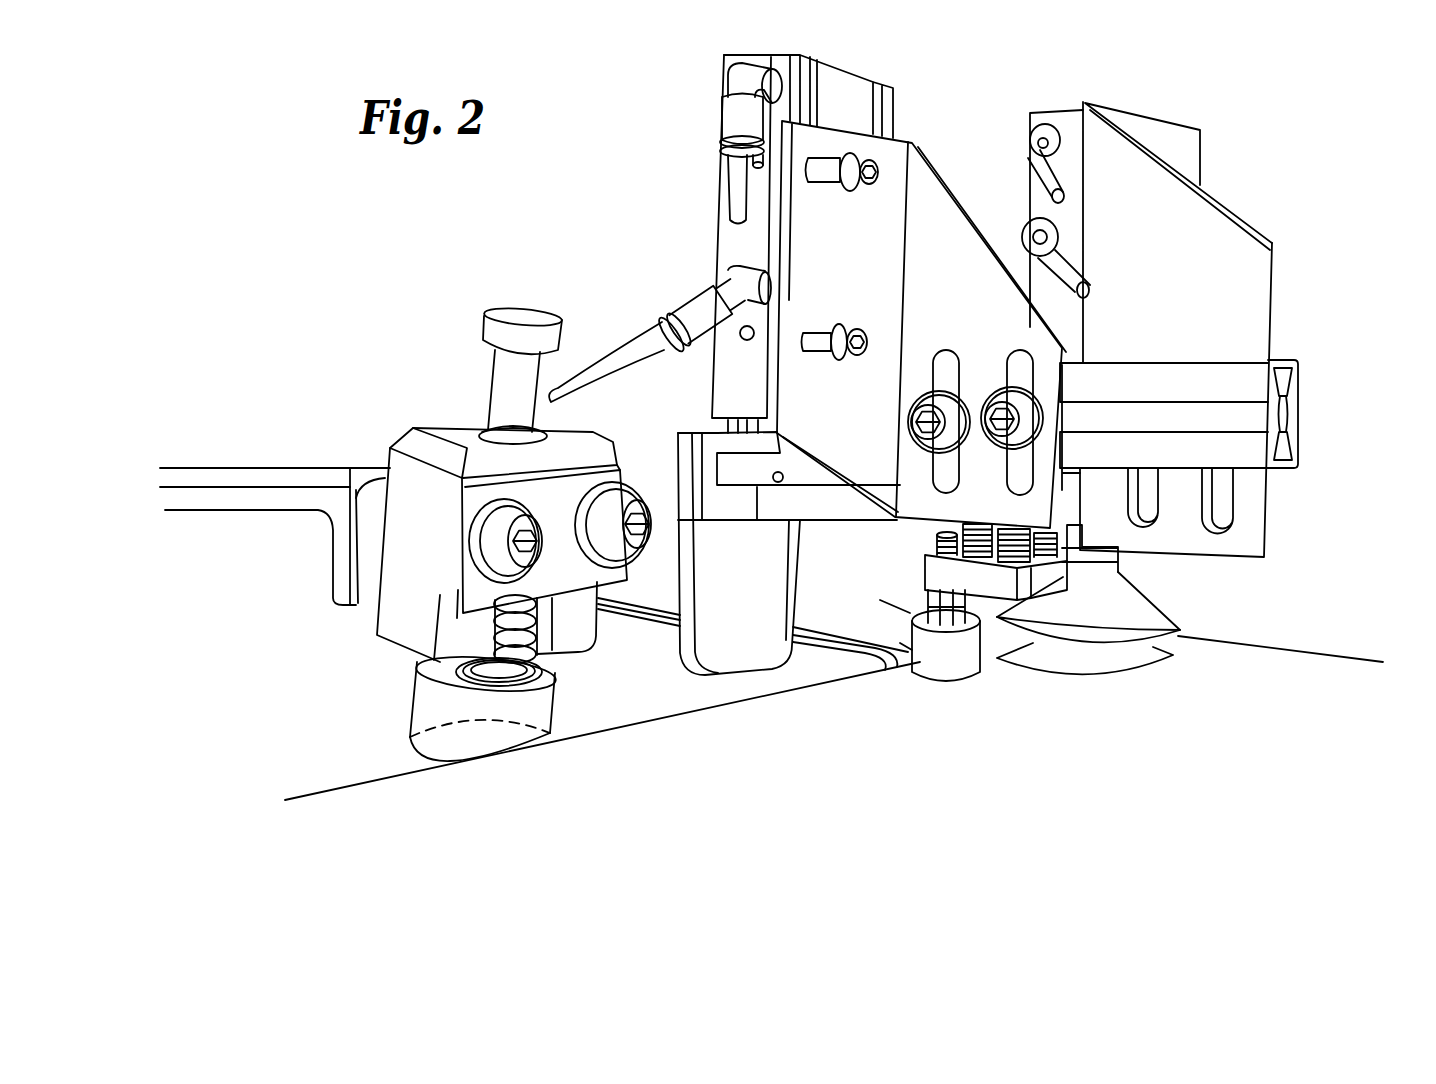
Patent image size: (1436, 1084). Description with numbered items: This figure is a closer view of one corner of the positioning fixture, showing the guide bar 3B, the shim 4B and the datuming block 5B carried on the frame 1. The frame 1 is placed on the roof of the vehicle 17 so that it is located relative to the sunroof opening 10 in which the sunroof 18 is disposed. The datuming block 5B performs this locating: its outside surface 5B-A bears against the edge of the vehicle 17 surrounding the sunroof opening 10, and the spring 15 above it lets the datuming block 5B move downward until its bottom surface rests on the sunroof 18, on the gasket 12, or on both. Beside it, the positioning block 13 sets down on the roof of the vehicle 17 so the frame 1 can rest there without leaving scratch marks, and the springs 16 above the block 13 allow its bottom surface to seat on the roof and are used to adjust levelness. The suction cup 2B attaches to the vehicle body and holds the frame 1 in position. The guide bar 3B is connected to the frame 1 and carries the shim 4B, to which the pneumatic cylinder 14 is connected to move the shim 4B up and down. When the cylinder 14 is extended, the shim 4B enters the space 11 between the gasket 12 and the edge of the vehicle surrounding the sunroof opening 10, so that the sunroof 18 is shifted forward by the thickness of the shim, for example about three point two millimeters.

The frame 1 is at (368, 467).
The suction cup 2B is at (1105, 645).
The guide bar 3B is at (1289, 360).
The shim 4B is at (765, 657).
The datuming block 5B is at (545, 738).
The outside surface 5B-A is at (452, 752).
The sunroof opening 10 is at (660, 682).
The space 11 is at (853, 640).
The gasket 12 is at (825, 640).
The positioning block 13 is at (950, 663).
The pneumatic cylinder 14 is at (852, 83).
The spring 15 is at (535, 654).
The spring 16 is at (980, 524).
The vehicle 17 is at (1245, 656).
The sunroof 18 is at (375, 760).